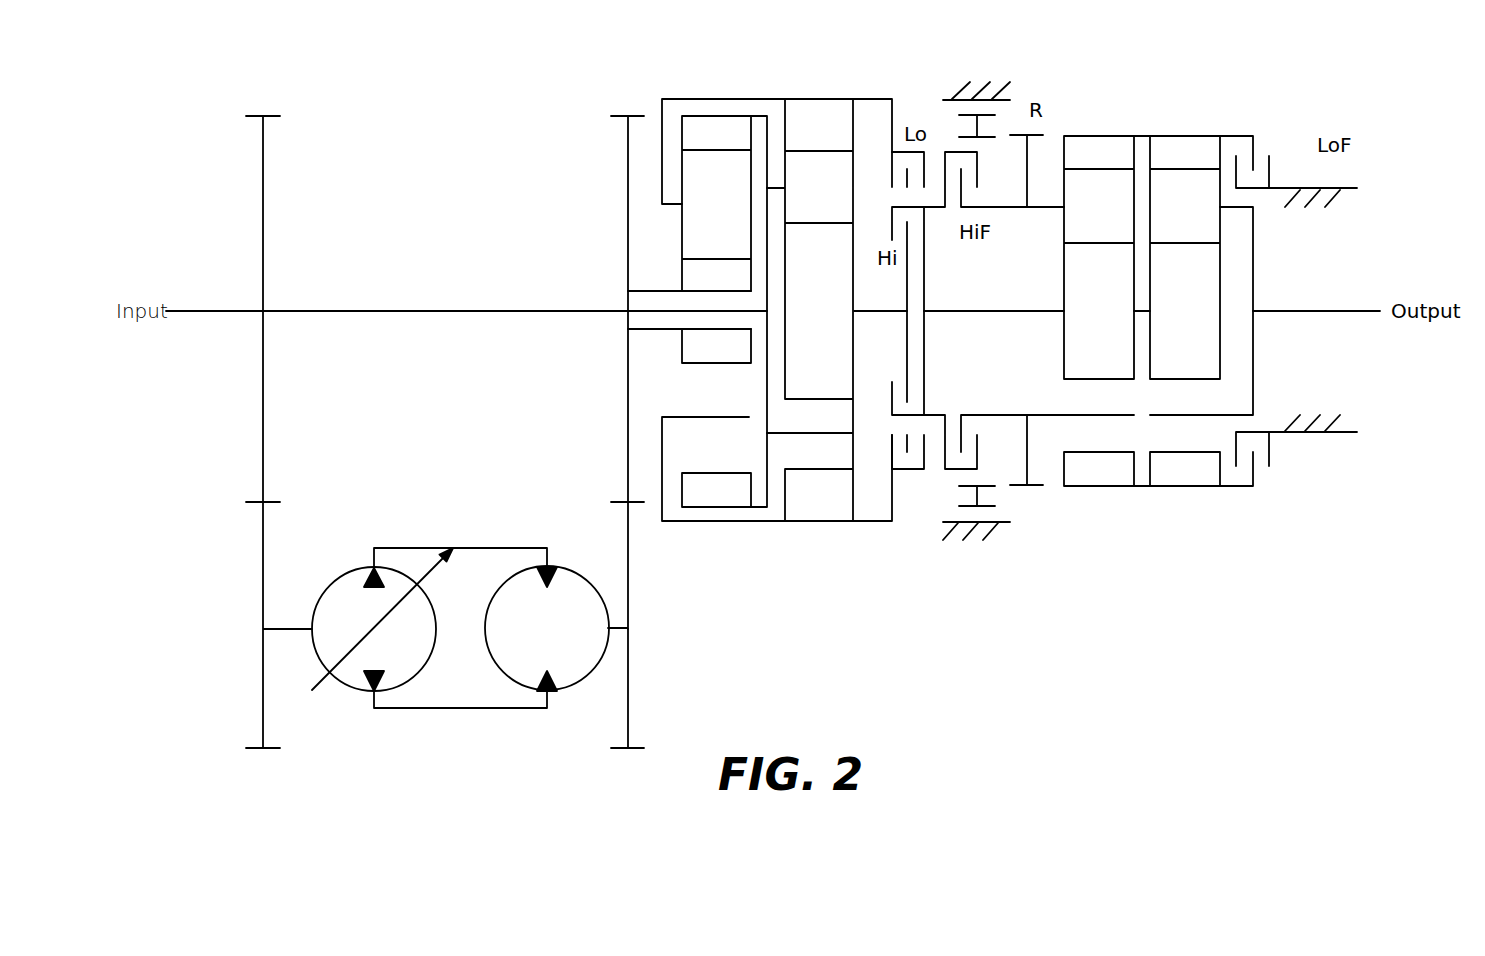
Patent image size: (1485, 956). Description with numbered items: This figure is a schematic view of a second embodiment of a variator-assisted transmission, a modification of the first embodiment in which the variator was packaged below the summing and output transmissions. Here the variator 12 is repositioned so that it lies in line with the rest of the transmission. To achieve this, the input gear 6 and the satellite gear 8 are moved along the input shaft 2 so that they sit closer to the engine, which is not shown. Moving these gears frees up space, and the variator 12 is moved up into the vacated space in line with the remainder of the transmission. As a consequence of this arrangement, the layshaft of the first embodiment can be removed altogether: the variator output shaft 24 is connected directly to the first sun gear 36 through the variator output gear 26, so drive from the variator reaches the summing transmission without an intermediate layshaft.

The input shaft 2 is at (205, 312).
The input gear 6 is at (263, 205).
The satellite gear 8 is at (263, 595).
The variator 12 is at (441, 715).
The variator output shaft 24 is at (628, 627).
The variator output gear 26 is at (628, 702).
The first sun gear 36 is at (681, 347).